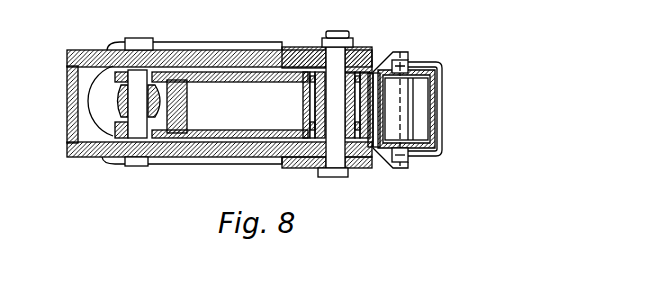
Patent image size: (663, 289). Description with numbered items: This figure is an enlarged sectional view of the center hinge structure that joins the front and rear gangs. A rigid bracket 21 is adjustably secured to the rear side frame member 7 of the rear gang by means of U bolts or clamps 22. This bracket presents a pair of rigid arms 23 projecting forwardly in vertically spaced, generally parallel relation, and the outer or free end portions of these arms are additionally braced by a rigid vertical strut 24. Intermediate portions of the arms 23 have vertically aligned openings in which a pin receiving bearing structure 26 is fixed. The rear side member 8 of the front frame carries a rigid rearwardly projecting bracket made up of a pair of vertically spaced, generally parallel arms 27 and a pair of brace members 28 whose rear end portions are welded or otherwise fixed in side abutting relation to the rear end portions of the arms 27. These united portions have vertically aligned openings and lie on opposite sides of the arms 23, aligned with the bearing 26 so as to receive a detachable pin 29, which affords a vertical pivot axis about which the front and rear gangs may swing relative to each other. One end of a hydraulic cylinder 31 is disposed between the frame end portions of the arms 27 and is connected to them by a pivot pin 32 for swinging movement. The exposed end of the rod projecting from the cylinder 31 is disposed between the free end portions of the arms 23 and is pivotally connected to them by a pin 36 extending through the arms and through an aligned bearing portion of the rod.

The rear side frame member 7 is at (431, 118).
The rear side member of the front frame 8 is at (68, 75).
The rigid bracket 21 is at (405, 60).
The U bolts or clamps 22 is at (442, 95).
The rigid arms 23 is at (237, 129).
The rigid vertical strut 24 is at (187, 120).
The pin receiving bearing structure 26 is at (303, 103).
The rearwardly extending arms 27 is at (292, 48).
The brace members 28 is at (228, 48).
The detachable pin 29 is at (336, 178).
The hydraulic cylinder 31 is at (90, 117).
The pivot pin 32 is at (133, 168).
The pin 36 is at (133, 100).